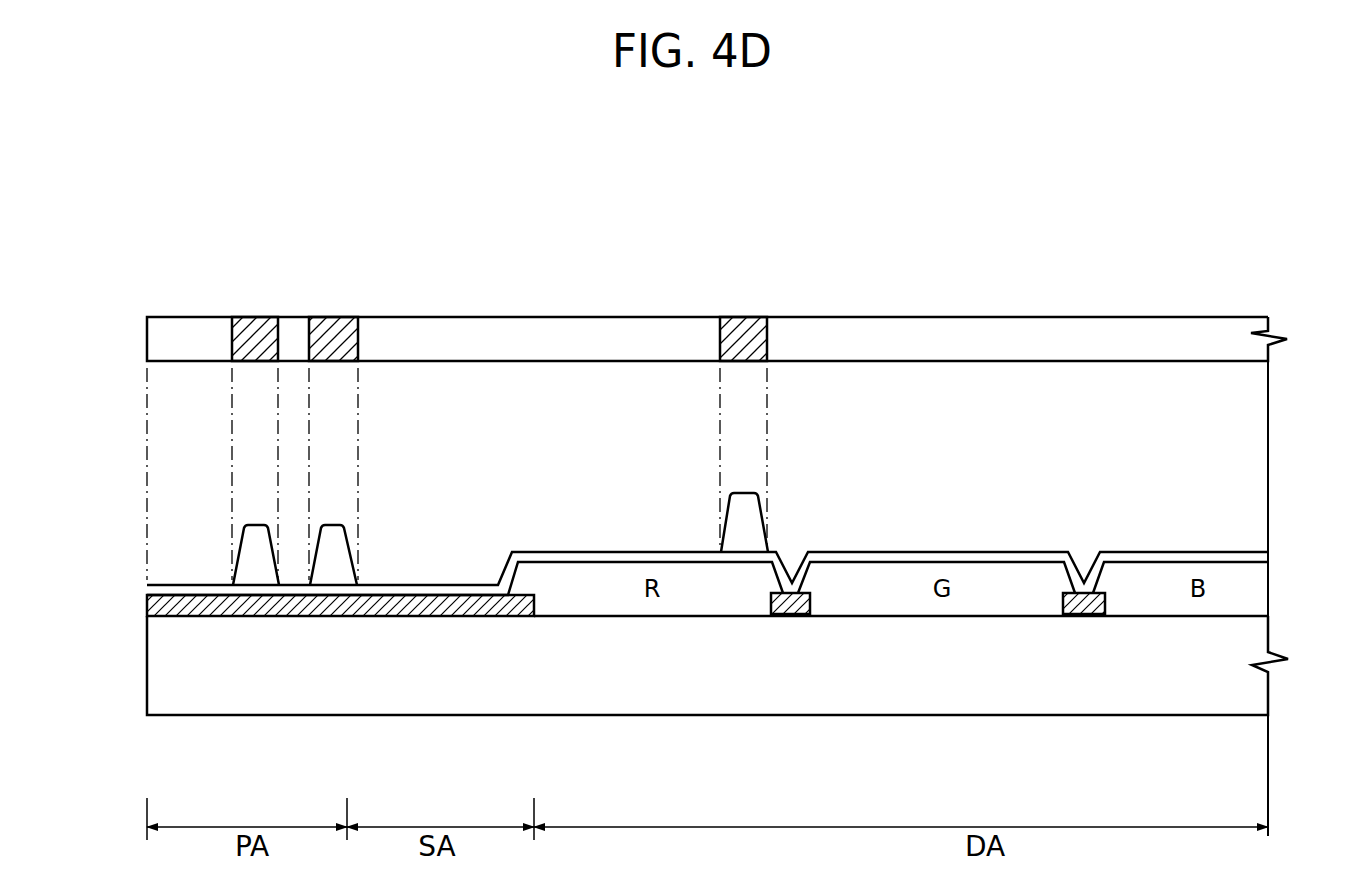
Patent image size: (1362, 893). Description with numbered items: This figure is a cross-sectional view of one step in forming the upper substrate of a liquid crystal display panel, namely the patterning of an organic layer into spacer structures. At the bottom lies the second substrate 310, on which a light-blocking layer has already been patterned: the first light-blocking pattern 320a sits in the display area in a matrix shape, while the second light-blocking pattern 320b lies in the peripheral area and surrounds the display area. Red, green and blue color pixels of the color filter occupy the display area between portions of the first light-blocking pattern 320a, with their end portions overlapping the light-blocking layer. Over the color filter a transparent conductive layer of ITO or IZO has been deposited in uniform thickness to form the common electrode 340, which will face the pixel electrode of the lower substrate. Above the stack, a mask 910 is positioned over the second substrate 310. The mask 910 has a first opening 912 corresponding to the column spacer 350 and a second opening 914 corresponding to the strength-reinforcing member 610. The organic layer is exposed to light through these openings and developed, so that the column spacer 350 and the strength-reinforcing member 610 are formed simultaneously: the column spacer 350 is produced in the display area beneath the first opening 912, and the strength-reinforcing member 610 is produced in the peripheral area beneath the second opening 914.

The second substrate 310 is at (150, 646).
The first light-blocking pattern 320a is at (787, 614).
The second light-blocking pattern 320b is at (150, 606).
The common electrode 340 is at (1263, 554).
The column spacer 350 is at (754, 513).
The strength-reinforcing member 610 is at (252, 546).
The mask 910 is at (150, 354).
The first opening 912 is at (745, 320).
The second opening 914 is at (248, 320).